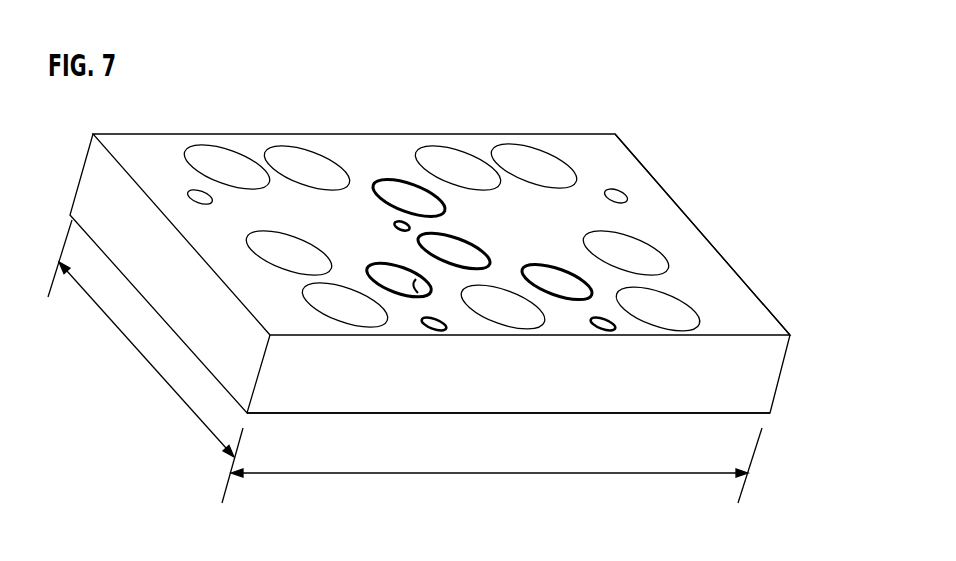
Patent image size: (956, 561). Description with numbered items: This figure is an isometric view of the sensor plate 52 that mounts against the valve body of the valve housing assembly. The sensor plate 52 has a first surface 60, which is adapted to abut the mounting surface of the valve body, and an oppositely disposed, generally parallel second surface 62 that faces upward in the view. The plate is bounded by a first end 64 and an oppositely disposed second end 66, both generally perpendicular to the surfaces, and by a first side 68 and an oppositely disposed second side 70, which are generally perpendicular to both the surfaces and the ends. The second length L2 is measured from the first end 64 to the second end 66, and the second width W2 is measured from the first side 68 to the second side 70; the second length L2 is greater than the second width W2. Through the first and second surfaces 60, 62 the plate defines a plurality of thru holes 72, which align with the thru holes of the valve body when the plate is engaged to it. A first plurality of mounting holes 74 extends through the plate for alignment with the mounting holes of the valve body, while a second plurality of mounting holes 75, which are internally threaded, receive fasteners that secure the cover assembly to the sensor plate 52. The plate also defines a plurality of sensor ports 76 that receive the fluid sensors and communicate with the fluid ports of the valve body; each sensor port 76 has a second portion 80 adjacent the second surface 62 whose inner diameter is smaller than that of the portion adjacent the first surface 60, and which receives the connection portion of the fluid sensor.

The sensor plate 52 is at (262, 108).
The first surface 60 is at (657, 413).
The second surface 62 is at (446, 251).
The first end 64 is at (703, 235).
The second end 66 is at (170, 273).
The first side 68 is at (518, 374).
The second side 70 is at (433, 134).
The thru holes 72 is at (330, 318).
The first plurality of mounting holes 74 is at (627, 235).
The second plurality of mounting holes 75 is at (612, 190).
The sensor ports 76 is at (364, 256).
The second portion 80 is at (416, 279).
The second width W2 is at (152, 365).
The second length L2 is at (582, 473).